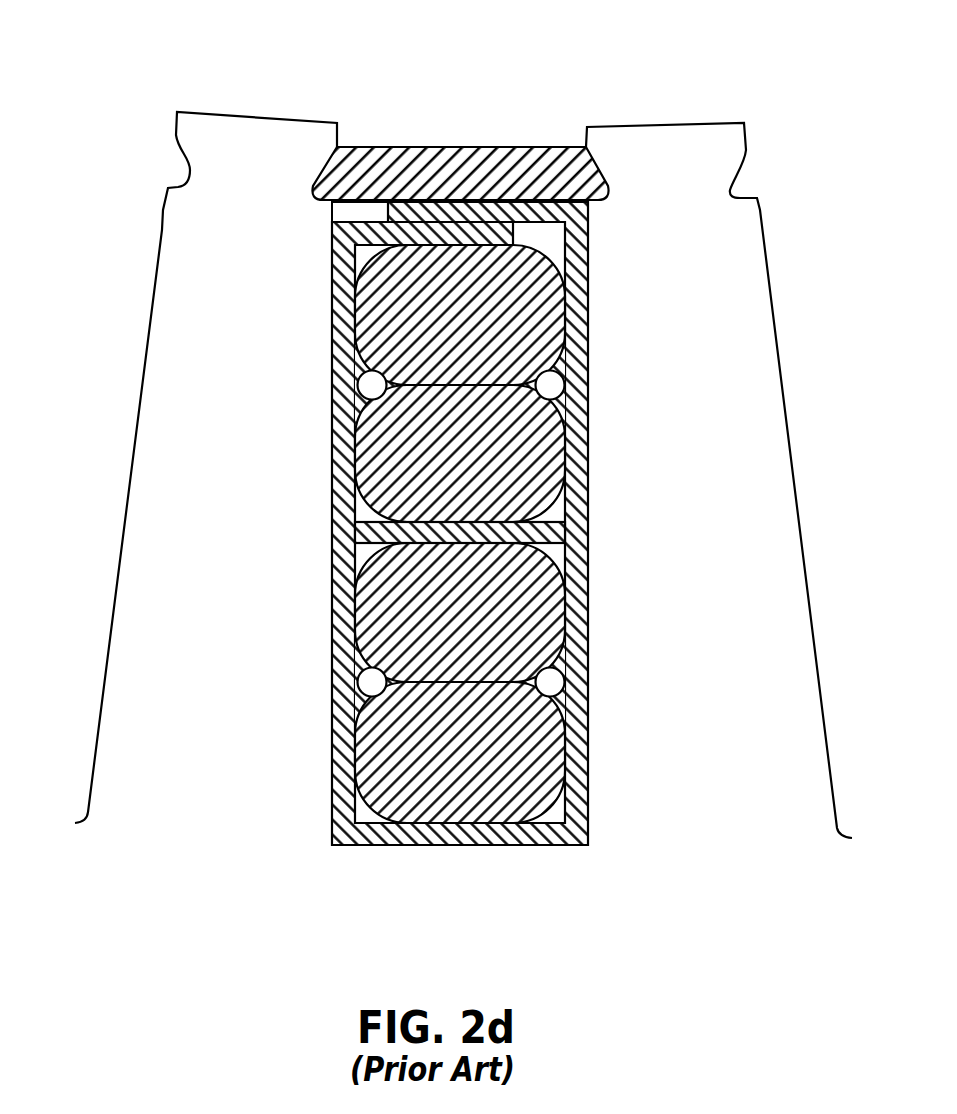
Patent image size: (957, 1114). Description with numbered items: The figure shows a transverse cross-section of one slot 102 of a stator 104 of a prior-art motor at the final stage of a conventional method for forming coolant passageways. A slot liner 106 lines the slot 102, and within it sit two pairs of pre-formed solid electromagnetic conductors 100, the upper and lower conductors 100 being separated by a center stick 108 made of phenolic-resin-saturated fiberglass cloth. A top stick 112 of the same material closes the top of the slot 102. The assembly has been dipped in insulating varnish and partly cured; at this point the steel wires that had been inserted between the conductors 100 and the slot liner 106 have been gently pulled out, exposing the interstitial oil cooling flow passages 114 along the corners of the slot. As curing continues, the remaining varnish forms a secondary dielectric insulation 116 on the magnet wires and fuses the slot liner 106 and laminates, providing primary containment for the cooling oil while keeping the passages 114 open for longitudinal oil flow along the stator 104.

The electromagnetic conductors 100 is at (362, 745).
The slot 102 is at (464, 100).
The stator 104 is at (730, 676).
The slot liner 106 is at (580, 377).
The center stick 108 is at (565, 534).
The top stick 112 is at (545, 160).
The interstitial oil cooling flow passages 114 is at (563, 683).
The secondary dielectric insulation 116 is at (357, 366).